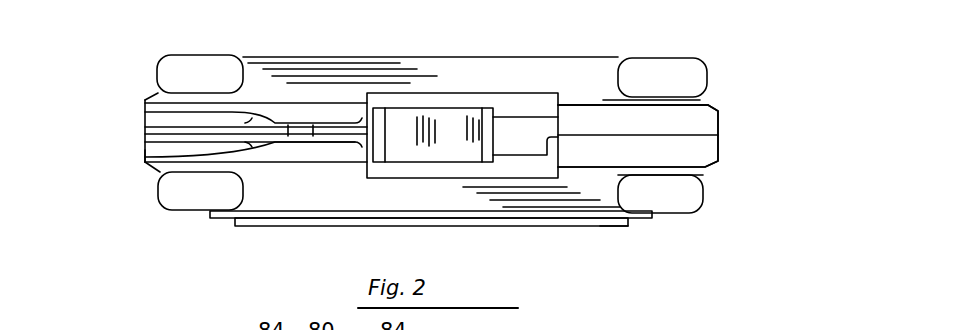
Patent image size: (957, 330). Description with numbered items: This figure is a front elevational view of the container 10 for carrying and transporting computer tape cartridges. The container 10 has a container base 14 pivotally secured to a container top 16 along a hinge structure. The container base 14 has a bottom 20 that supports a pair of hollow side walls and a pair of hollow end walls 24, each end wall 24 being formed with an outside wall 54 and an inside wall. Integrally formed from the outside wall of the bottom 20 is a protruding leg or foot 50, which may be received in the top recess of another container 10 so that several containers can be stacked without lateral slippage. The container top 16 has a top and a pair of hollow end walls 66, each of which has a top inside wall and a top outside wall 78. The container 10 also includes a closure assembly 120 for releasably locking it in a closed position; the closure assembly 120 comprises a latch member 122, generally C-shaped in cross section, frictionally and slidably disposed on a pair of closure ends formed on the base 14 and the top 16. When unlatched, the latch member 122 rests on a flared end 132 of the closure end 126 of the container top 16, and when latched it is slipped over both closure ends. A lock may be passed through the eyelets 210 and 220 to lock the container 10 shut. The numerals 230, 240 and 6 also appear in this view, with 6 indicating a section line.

The container 10 is at (740, 80).
The container base 14 is at (266, 176).
The container top 16 is at (266, 86).
The bottom 20 is at (199, 223).
The end walls 24 is at (655, 198).
The protruding leg or foot 50 is at (625, 222).
The outside wall 54 is at (658, 174).
The hollow end walls 66 is at (695, 103).
The top outside wall 78 is at (603, 100).
The closure assembly 120 is at (413, 95).
The latch member 122 is at (448, 137).
The closure end 126 is at (532, 128).
The flared end 132 is at (533, 143).
The eyelet 210 is at (145, 125).
The eyelet 220 is at (142, 165).
The upper spring contact 230 is at (143, 112).
The lower spring contact 240 is at (147, 167).
The section line 6- 6 is at (135, 132).